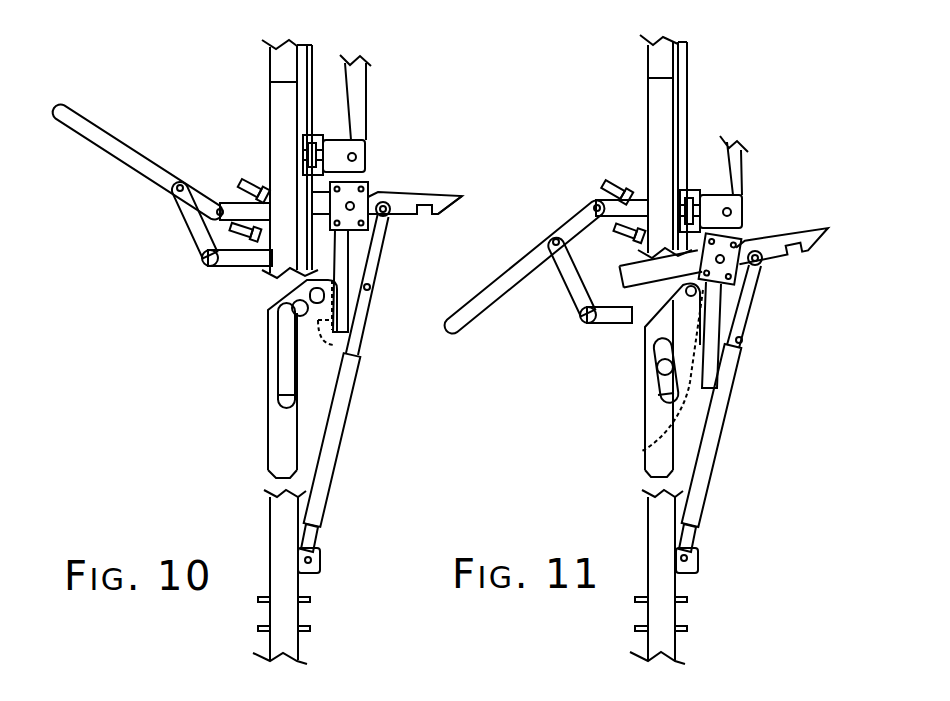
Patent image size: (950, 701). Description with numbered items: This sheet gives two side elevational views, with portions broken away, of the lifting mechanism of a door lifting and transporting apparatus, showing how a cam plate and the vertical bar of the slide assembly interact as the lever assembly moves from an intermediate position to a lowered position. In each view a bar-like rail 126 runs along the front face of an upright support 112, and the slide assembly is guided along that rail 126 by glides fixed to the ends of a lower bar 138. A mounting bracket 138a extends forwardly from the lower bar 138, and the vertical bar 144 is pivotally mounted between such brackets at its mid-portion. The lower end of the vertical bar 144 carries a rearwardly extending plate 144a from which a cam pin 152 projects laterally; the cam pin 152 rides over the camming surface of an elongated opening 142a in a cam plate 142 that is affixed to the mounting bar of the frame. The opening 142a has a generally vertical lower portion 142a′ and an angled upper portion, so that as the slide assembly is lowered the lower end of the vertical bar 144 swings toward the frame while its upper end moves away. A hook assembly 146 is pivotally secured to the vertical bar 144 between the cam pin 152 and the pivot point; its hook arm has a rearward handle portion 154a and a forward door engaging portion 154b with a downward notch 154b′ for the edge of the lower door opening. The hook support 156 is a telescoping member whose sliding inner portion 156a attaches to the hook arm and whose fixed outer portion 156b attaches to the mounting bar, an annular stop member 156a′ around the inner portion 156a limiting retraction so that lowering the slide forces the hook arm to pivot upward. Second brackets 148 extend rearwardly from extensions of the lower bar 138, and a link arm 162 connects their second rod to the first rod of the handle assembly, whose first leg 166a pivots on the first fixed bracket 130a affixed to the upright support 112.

In FIG. 10, the upright support 112 is at (276, 615).
In FIG. 11, the upright support 112 is at (652, 612).
In FIG. 10, the rail 126 is at (306, 46).
In FIG. 11, the rail 126 is at (682, 43).
In FIG. 10, the first fixed bracket 130a is at (237, 207).
In FIG. 11, the first fixed bracket 130a is at (605, 200).
In FIG. 10, the lower bar 138 is at (320, 150).
In FIG. 11, the lower bar 138 is at (700, 195).
In FIG. 10, the mounting bracket 138a is at (368, 155).
In FIG. 11, the mounting bracket 138a is at (742, 205).
In FIG. 10, the cam plate 142 is at (310, 380).
In FIG. 11, the cam plate 142 is at (688, 406).
In FIG. 10, the elongated opening 142a is at (279, 325).
In FIG. 11, the elongated opening 142a is at (658, 368).
In FIG. 10, the lower portion 142a′ is at (287, 397).
In FIG. 11, the lower portion 142a′ is at (656, 410).
In FIG. 10, the vertical bar 144 is at (374, 76).
In FIG. 11, the vertical bar 144 is at (740, 152).
In FIG. 10, the rearwardly extending plate 144a is at (336, 345).
In FIG. 11, the rearwardly extending plate 144a is at (640, 452).
In FIG. 10, the hook assembly 146 is at (412, 413).
In FIG. 11, the hook assembly 146 is at (787, 412).
In FIG. 10, the second bracket 148 is at (233, 273).
In FIG. 11, the second bracket 148 is at (598, 215).
In FIG. 10, the cam pin 152 is at (291, 307).
In FIG. 11, the cam pin 152 is at (662, 396).
In FIG. 11, the handle portion 154a is at (635, 268).
In FIG. 10, the door engaging portion 154b is at (415, 189).
In FIG. 11, the door engaging portion 154b is at (765, 232).
In FIG. 10, the notch 154b′ is at (425, 208).
In FIG. 11, the notch 154b′ is at (797, 253).
In FIG. 10, the hook support 156 is at (327, 522).
In FIG. 11, the hook support 156 is at (687, 548).
In FIG. 10, the sliding inner portion 156a is at (400, 278).
In FIG. 11, the sliding inner portion 156a is at (745, 318).
In FIG. 10, the annular stop member 156a′ is at (372, 288).
In FIG. 11, the annular stop member 156a′ is at (742, 342).
In FIG. 10, the fixed outer portion 156b is at (340, 460).
In FIG. 11, the fixed outer portion 156b is at (718, 460).
In FIG. 10, the link arm 162 is at (180, 230).
In FIG. 11, the link arm 162 is at (556, 290).
In FIG. 10, the first leg 166a is at (107, 133).
In FIG. 11, the first leg 166a is at (480, 327).